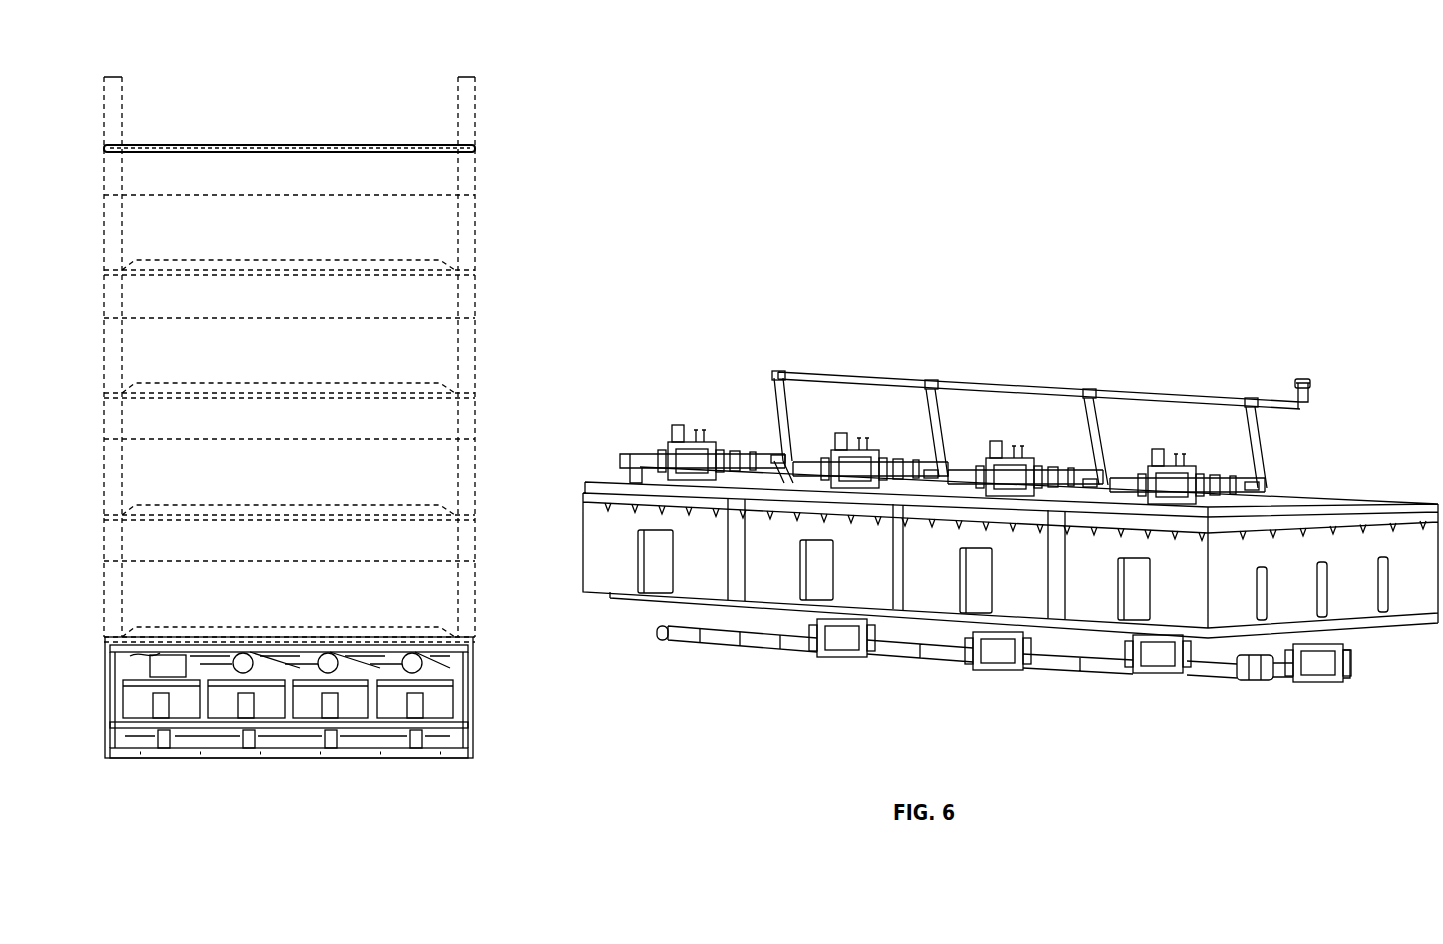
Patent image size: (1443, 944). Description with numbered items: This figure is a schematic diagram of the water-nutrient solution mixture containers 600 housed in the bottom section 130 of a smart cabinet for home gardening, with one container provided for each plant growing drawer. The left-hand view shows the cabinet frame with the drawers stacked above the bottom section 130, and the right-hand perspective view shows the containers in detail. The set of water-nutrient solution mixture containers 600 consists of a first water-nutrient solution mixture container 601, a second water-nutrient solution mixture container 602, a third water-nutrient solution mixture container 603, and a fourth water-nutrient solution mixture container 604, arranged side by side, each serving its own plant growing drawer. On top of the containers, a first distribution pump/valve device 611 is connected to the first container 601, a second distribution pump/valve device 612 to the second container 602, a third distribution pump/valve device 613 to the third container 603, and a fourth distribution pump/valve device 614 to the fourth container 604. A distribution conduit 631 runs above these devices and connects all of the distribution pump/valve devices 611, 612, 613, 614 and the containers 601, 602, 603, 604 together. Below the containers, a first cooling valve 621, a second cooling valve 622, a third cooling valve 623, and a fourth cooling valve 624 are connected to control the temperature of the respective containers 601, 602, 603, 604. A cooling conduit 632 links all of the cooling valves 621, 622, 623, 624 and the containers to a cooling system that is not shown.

The water-nutrient solution mixture containers 600 is at (815, 525).
The bottom section 130 is at (482, 637).
The first water-nutrient solution mixture container 601 is at (719, 562).
The second water-nutrient solution mixture container 602 is at (877, 564).
The third water-nutrient solution mixture container 603 is at (1039, 571).
The fourth water-nutrient solution mixture container 604 is at (1199, 574).
The first distribution pump/valve device 611 is at (692, 438).
The second distribution pump/valve device 612 is at (848, 448).
The third distribution pump/valve device 613 is at (1008, 458).
The fourth distribution pump/valve device 614 is at (1173, 456).
The first cooling valve 621 is at (827, 657).
The second cooling valve 622 is at (987, 665).
The third cooling valve 623 is at (1147, 675).
The fourth cooling valve 624 is at (1308, 687).
The distribution conduit 631 is at (997, 385).
The cooling conduit 632 is at (678, 638).